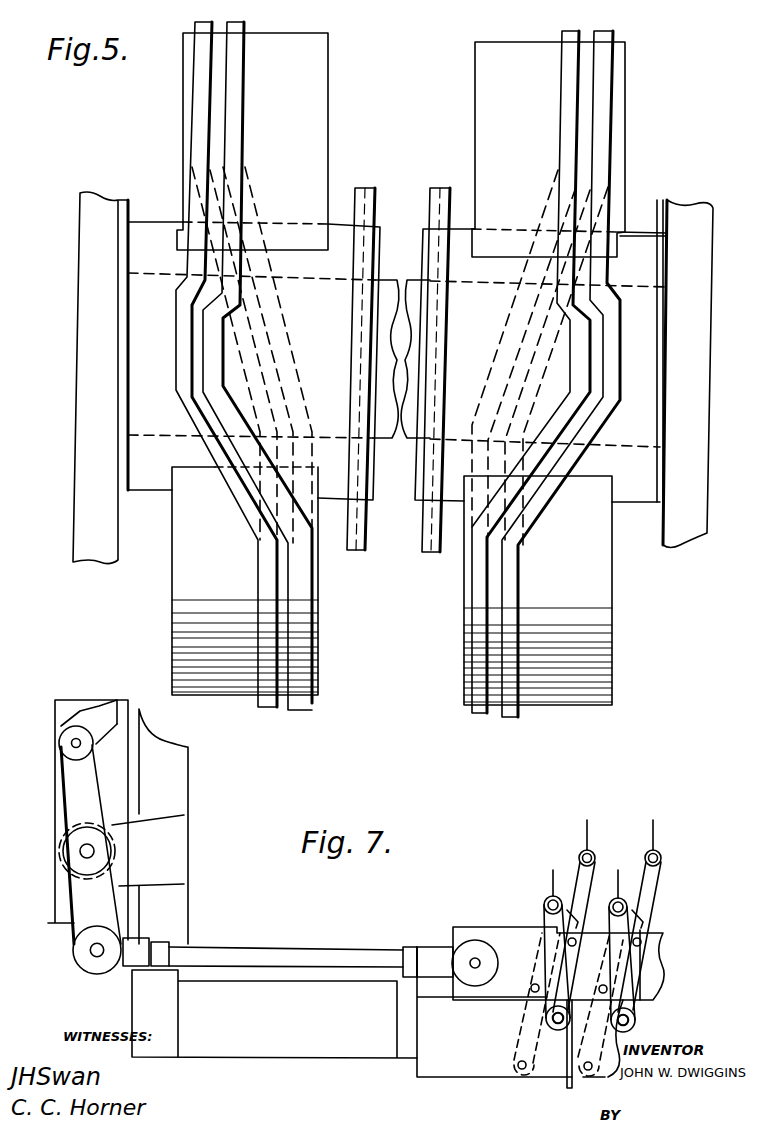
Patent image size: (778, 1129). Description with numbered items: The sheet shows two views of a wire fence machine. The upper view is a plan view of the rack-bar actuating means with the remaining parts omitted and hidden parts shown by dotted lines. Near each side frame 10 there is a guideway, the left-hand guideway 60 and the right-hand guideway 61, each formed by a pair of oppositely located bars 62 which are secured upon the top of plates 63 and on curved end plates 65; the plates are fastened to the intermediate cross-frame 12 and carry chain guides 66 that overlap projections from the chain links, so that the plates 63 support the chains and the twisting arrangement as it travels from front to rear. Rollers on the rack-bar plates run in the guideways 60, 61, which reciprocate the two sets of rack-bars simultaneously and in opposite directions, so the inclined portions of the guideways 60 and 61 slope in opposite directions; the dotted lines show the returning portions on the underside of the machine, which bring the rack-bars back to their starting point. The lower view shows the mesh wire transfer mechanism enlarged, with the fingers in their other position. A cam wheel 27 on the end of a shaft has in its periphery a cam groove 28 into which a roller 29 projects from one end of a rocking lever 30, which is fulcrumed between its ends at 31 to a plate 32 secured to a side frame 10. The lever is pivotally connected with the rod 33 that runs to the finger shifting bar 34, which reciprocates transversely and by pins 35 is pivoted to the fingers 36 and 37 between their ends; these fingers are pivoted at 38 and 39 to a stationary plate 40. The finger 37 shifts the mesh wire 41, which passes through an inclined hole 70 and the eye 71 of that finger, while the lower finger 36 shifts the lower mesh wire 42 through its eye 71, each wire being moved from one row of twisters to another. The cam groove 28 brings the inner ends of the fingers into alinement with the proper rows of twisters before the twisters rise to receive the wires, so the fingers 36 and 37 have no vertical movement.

In FIG. 5, the side frame 10 is at (83, 224).
In FIG. 7, the side frame 10 is at (163, 826).
In FIG. 5, the cross-frame 12 is at (383, 443).
In FIG. 7, the cam wheel 27 is at (59, 717).
In FIG. 7, the cam groove 28 is at (100, 711).
In FIG. 7, the roller 29 is at (65, 745).
In FIG. 7, the rocking lever 30 is at (67, 790).
In FIG. 7, the fulcrum 31 is at (84, 851).
In FIG. 7, the plate 32 is at (165, 823).
In FIG. 7, the rod 33 is at (266, 949).
In FIG. 7, the finger shifting bar 34 is at (453, 932).
In FIG. 7, the pins 35 is at (533, 990).
In FIG. 7, the lower finger 36 is at (545, 912).
In FIG. 7, the finger 37 is at (578, 868).
In FIG. 7, the pivot 38 is at (522, 1077).
In FIG. 7, the pivot 39 is at (628, 1020).
In FIG. 7, the stationary plate 40 is at (430, 1067).
In FIG. 7, the mesh wire 41 is at (590, 825).
In FIG. 7, the lower mesh wire 42 is at (553, 877).
In FIG. 5, the left-hand guideway 60 is at (193, 318).
In FIG. 5, the right-hand guideway 61 is at (585, 148).
In FIG. 5, the bars 62 is at (240, 57).
In FIG. 5, the plates 63 is at (648, 215).
In FIG. 5, the curved end plates 65 is at (330, 93).
In FIG. 5, the chain guides 66 is at (363, 550).
In FIG. 7, the inclined hole 70 is at (581, 914).
In FIG. 7, the eye 71 is at (593, 857).